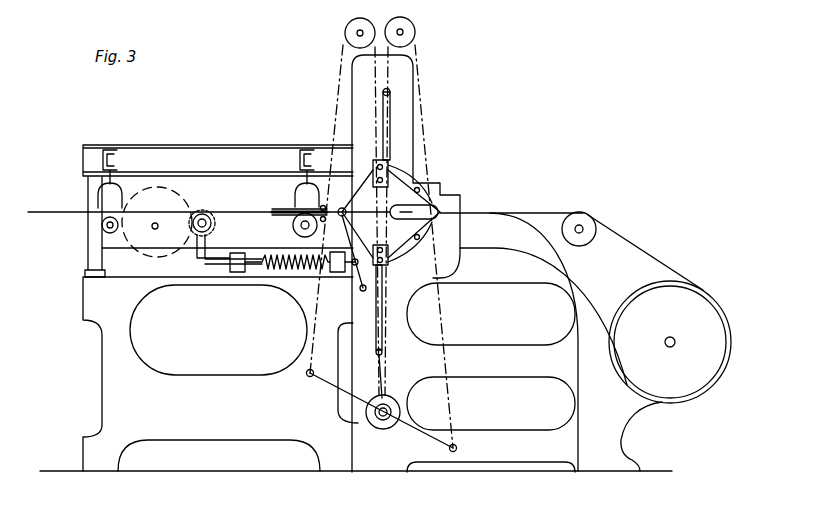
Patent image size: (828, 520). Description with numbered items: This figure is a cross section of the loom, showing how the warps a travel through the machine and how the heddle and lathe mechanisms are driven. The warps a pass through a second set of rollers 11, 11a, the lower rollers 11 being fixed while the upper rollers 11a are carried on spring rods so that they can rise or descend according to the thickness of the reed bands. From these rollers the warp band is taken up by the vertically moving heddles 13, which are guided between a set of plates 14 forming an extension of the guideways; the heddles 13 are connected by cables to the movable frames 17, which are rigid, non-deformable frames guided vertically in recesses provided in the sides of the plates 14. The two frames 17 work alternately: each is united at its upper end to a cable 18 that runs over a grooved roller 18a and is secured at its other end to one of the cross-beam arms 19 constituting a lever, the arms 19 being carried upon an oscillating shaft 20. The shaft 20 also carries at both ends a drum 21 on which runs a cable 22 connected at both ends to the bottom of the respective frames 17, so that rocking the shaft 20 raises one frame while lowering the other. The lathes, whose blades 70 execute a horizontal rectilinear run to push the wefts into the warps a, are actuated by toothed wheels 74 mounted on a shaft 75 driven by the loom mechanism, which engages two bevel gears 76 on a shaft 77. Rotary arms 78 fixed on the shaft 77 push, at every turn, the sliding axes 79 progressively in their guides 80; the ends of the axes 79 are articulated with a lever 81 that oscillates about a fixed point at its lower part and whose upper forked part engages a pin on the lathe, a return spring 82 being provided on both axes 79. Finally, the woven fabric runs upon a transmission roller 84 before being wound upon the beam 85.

The warps a is at (52, 213).
The rollers 11 is at (106, 232).
The upper rollers 11a is at (120, 185).
The heddles 13 is at (390, 168).
The plates 14 is at (430, 180).
The movable frames 17 is at (392, 104).
The cables 18 is at (340, 98).
The grooved rollers 18a is at (345, 34).
The cross-beam arms 19 is at (405, 427).
The oscillating shaft 20 is at (380, 420).
The drum 21 is at (336, 421).
The cable 22 is at (397, 358).
The blades 70 is at (293, 229).
The toothed wheels 74 is at (163, 187).
The shaft 75 is at (153, 229).
The bevel gears 76 is at (208, 212).
The shaft 77 is at (161, 219).
The rotary arms 78 is at (199, 258).
The sliding axes 79 is at (213, 266).
The guides 80 is at (237, 273).
The lever 81 is at (350, 218).
The return spring 82 is at (293, 264).
The transmission roller 84 is at (585, 228).
The beam 85 is at (670, 342).